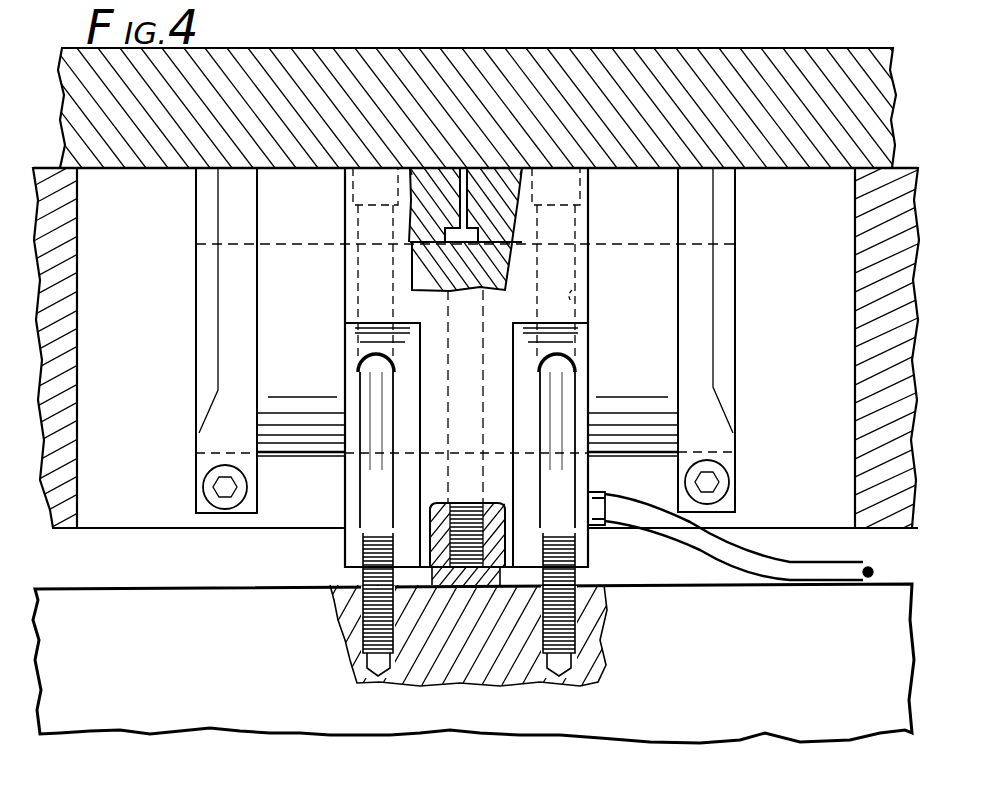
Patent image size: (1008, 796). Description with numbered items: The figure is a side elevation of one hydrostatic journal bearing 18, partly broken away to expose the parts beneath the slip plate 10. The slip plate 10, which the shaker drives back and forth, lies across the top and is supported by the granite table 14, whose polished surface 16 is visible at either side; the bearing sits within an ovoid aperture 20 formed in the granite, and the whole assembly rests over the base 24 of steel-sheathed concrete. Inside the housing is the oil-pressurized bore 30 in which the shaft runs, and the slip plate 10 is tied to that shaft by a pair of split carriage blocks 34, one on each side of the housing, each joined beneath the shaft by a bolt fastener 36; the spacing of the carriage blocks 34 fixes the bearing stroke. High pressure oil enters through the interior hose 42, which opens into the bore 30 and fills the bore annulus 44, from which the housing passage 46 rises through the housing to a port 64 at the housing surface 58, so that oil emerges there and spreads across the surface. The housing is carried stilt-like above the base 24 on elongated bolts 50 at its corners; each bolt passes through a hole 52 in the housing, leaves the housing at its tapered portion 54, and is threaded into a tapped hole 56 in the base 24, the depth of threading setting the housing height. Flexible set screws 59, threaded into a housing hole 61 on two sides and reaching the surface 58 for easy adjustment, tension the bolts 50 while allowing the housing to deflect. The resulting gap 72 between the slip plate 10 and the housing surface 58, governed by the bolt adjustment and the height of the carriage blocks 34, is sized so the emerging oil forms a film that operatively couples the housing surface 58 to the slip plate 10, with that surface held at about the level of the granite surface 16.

The slip plate 10 is at (603, 68).
The granite table 14 is at (855, 342).
The polished surface 16 is at (866, 165).
The hydrostatic journal bearing 18 is at (335, 497).
The ovoid aperture 20 is at (804, 425).
The base 24 is at (724, 683).
The housing bore 30 is at (282, 246).
The carriage block 34 is at (196, 328).
The bolt fastener 36 is at (205, 487).
The interior hose 42 is at (717, 560).
The bore annulus 44 is at (470, 231).
The housing passage 46 is at (459, 202).
The elongated bolt 50 is at (548, 395).
The hole 52 is at (572, 296).
The tapered portion 54 is at (585, 367).
The tapped hole 56 is at (568, 645).
The housing surface 58 is at (512, 166).
The set screw 59 is at (430, 512).
The housing hole 61 is at (458, 530).
The port 64 is at (462, 166).
The gap 72 is at (420, 166).